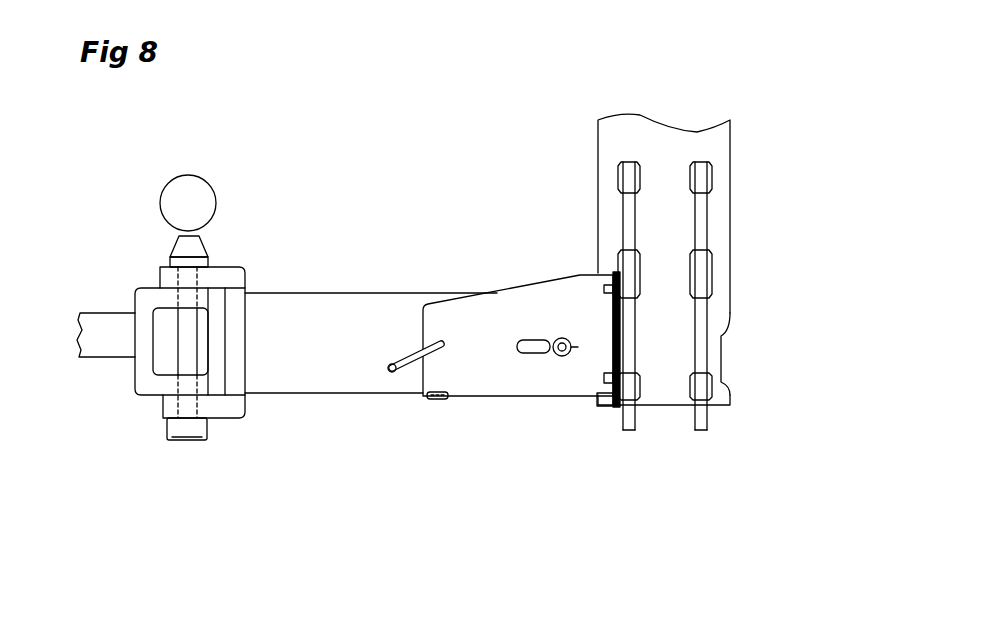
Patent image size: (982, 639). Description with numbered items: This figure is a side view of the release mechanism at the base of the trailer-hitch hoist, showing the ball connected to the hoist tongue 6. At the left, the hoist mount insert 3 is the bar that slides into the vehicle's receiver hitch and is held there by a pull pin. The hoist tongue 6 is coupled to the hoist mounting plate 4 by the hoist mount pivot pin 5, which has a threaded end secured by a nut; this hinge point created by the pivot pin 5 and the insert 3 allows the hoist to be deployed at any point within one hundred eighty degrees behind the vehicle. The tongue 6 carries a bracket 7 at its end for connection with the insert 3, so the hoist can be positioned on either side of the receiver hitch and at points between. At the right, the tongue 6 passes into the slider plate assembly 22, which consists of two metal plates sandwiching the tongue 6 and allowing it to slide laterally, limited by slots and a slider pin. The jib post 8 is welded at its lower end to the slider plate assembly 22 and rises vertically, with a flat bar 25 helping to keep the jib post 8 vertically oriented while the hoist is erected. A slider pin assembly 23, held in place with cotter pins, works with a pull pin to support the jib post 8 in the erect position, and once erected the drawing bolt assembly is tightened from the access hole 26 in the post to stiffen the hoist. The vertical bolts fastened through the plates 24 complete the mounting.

The hoist mount insert 3 is at (110, 312).
The hoist mounting plate 4 is at (140, 400).
The hoist mount pivot pin 5 is at (187, 442).
The hoist tongue 6 is at (287, 293).
The bracket 7 is at (240, 418).
The jib post 8 is at (650, 114).
The slider plate assembly 22 is at (527, 286).
The slider pin assembly 23 is at (556, 357).
The mounting plate 24 is at (598, 273).
The flat bar 25 is at (428, 402).
The access hole 26 is at (727, 347).